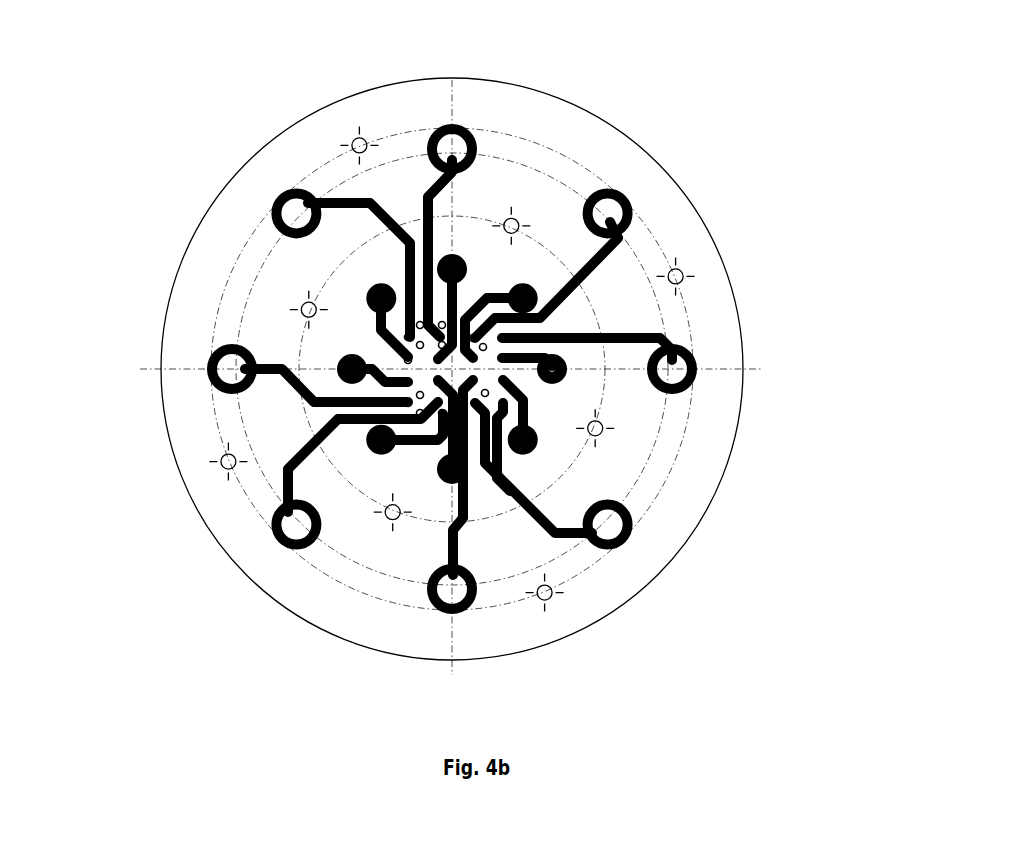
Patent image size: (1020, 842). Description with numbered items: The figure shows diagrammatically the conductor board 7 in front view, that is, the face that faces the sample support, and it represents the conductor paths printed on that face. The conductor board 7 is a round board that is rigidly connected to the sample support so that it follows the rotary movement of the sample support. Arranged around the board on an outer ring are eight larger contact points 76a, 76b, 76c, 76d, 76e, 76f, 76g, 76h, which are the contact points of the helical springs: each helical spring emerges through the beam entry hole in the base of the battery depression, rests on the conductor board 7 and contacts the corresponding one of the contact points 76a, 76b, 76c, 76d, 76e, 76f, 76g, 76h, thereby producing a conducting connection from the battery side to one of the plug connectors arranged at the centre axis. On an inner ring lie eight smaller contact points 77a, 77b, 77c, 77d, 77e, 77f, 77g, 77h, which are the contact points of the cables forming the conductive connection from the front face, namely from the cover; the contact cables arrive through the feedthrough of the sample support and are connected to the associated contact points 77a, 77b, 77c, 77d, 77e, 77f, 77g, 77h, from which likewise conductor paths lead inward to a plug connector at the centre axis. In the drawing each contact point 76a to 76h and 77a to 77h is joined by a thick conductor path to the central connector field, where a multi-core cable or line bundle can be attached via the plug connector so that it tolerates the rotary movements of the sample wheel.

The conductor board 7 is at (758, 253).
The contact point of the helical spring 76a is at (693, 356).
The contact point of the helical spring 76b is at (626, 545).
The contact point of the helical spring 76c is at (470, 612).
The contact point of the helical spring 76d is at (280, 535).
The contact point of the helical spring 76e is at (214, 386).
The contact point of the helical spring 76f is at (279, 196).
The contact point of the helical spring 76g is at (453, 124).
The contact point of the helical spring 76h is at (627, 195).
The contact point of the cable 77a is at (557, 372).
The contact point of the cable 77b is at (528, 446).
The contact point of the cable 77c is at (449, 478).
The contact point of the cable 77d is at (378, 446).
The contact point of the cable 77e is at (346, 366).
The contact point of the cable 77f is at (372, 296).
The contact point of the cable 77g is at (453, 262).
The contact point of the cable 77h is at (524, 295).